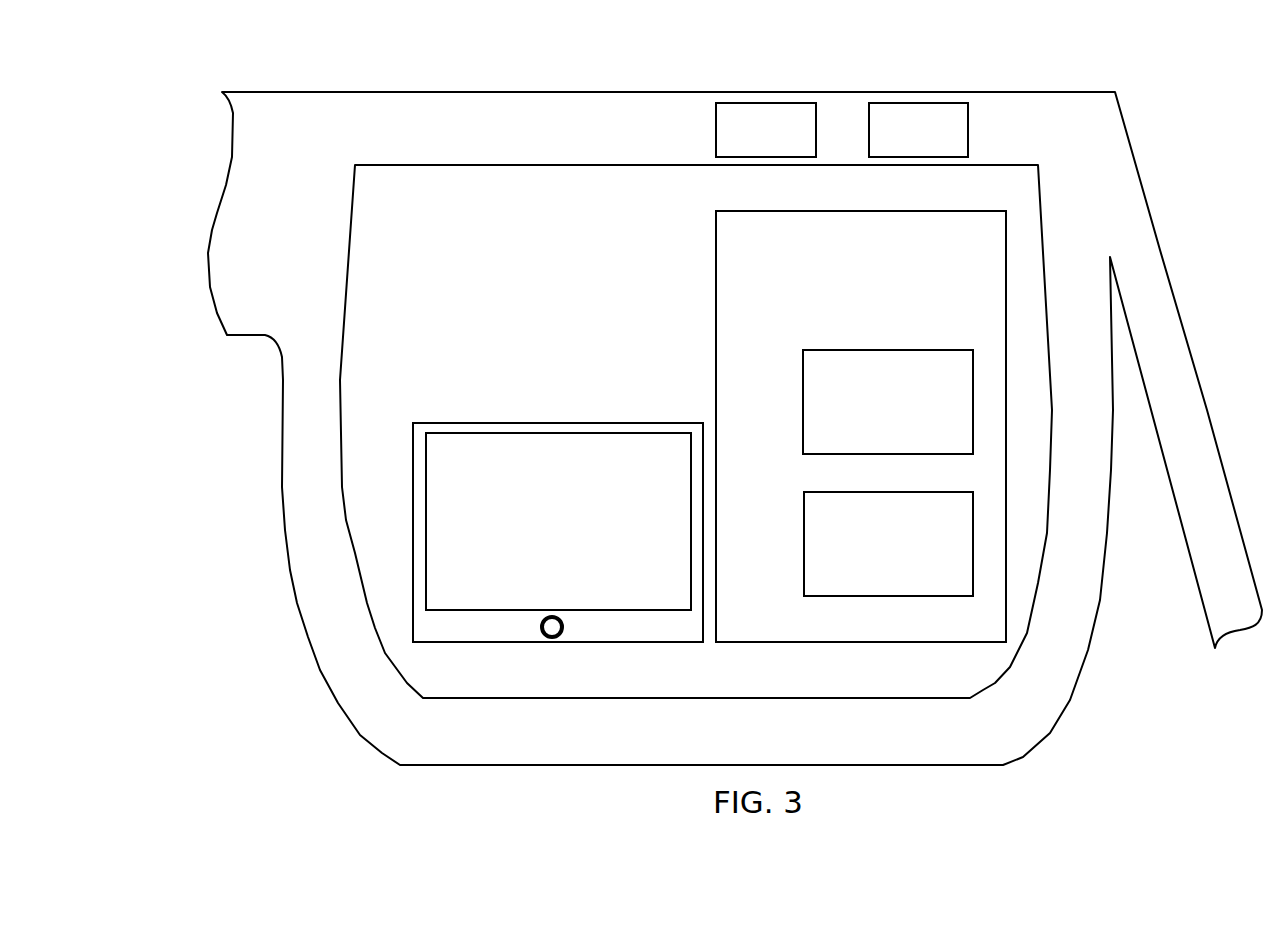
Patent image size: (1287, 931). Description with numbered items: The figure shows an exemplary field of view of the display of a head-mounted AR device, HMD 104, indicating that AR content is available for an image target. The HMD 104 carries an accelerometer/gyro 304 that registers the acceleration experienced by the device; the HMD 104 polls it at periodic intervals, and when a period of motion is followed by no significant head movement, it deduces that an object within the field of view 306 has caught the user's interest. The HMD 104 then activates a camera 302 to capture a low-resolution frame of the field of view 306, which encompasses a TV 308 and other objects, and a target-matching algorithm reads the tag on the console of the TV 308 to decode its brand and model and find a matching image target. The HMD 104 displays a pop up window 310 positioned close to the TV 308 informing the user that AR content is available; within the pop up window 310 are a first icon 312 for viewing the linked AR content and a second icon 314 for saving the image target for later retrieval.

The HMD 104 is at (533, 92).
The camera 302 is at (918, 103).
The accelerometer/gyro 304 is at (765, 103).
The field of view 306 is at (743, 676).
The TV 308 is at (538, 423).
The pop up window 310 is at (716, 246).
The first icon 312 is at (803, 400).
The second icon 314 is at (804, 540).